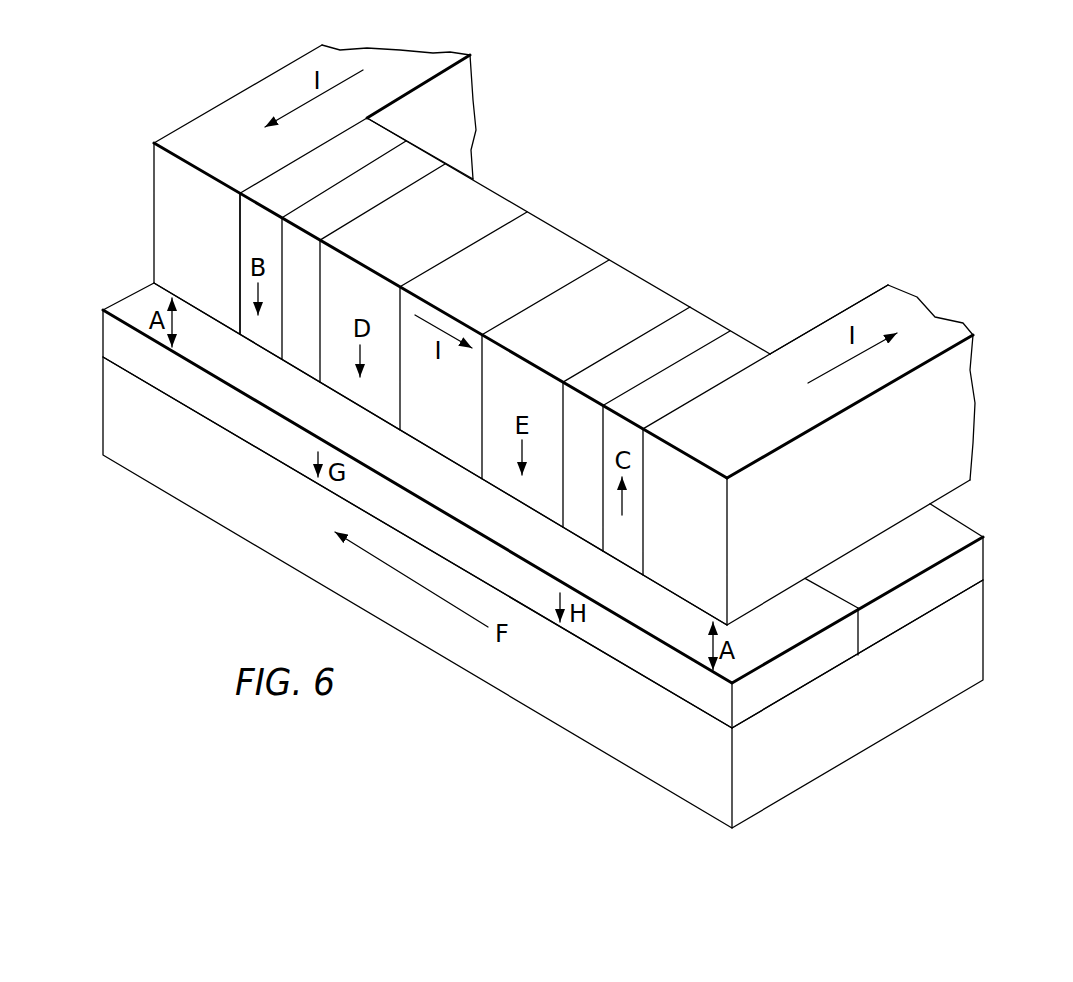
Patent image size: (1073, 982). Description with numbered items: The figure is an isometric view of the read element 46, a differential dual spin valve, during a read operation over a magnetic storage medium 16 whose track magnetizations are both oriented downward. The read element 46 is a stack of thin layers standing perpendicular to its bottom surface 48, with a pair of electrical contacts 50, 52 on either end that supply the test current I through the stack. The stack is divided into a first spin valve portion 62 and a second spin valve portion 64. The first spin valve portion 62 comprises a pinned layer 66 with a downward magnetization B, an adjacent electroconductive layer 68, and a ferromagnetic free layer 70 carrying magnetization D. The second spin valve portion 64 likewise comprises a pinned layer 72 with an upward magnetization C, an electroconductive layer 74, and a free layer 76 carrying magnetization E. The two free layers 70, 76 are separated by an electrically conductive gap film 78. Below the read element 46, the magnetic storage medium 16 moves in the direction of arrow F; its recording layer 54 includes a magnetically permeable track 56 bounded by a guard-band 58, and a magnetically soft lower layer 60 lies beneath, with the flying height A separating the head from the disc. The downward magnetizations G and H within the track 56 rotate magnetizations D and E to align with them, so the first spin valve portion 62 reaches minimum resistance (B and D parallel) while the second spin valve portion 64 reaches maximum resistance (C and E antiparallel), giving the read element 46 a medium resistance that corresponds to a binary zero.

The magnetic storage medium 16 is at (467, 713).
The read element 46 is at (682, 152).
The bottom surface of the read element 48 is at (447, 448).
The electrical contact 50 is at (784, 513).
The electrical contact 52 is at (212, 156).
The recording layer 54 is at (995, 550).
The track 56 is at (784, 680).
The guard-band 58 is at (902, 610).
The magnetically permeable lower layer 60 is at (767, 768).
The first spin valve portion 62 is at (527, 153).
The second spin valve portion 64 is at (755, 272).
The pinned layer 66 is at (334, 163).
The electroconductive layer 68 is at (375, 188).
The free layer 70 is at (437, 221).
The pinned layer 72 is at (697, 376).
The electroconductive layer 74 is at (659, 353).
The free layer 76 is at (607, 316).
The gap film 78 is at (519, 272).